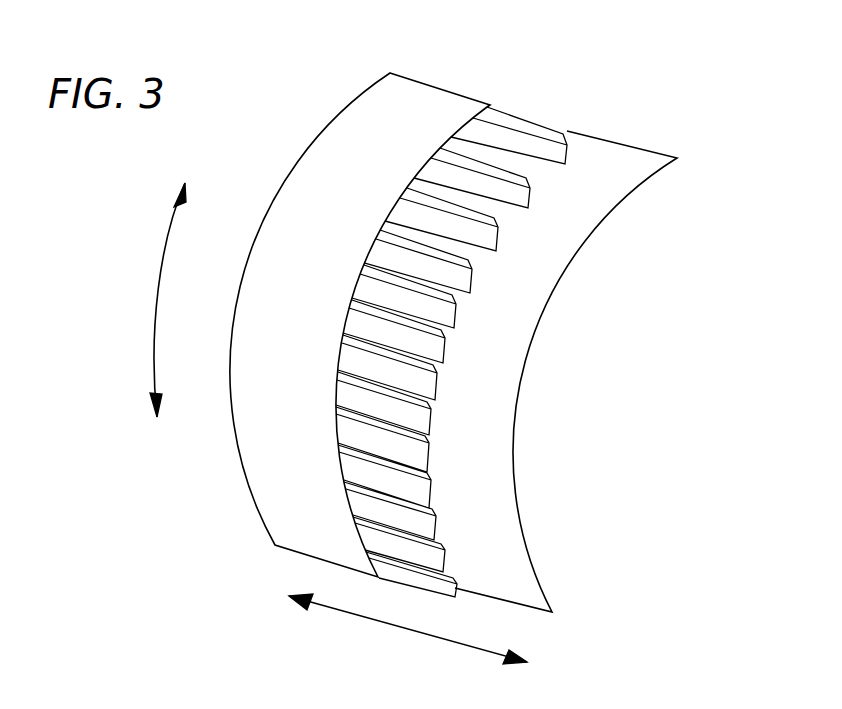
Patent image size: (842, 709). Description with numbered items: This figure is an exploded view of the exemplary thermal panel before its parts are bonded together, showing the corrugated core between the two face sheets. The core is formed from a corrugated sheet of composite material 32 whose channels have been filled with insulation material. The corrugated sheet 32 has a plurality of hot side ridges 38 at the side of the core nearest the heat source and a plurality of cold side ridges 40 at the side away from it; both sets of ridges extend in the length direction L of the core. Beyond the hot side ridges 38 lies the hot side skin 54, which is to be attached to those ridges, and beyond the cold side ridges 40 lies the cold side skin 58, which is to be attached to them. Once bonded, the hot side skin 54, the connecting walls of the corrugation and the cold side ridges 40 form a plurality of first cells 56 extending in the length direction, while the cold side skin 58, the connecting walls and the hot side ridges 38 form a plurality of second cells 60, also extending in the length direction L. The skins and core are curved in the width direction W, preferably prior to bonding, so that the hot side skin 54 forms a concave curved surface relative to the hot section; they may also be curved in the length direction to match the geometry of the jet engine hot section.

The corrugated sheet of composite material 32 is at (520, 125).
The hot side ridges 38 is at (560, 168).
The cold side ridges 40 is at (470, 218).
The hot side skin 54 is at (630, 174).
The first cells 56 is at (453, 292).
The cold side skin 58 is at (400, 122).
The second cells 60 is at (498, 205).
The width direction W is at (157, 305).
The length direction L is at (437, 638).